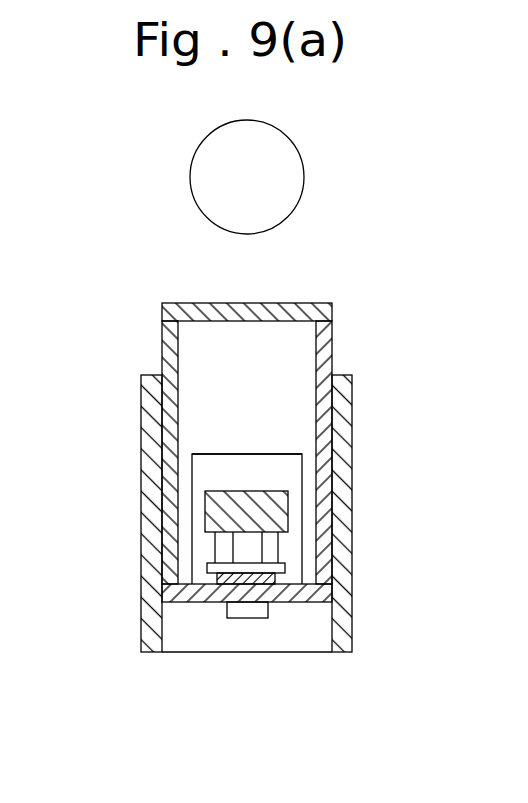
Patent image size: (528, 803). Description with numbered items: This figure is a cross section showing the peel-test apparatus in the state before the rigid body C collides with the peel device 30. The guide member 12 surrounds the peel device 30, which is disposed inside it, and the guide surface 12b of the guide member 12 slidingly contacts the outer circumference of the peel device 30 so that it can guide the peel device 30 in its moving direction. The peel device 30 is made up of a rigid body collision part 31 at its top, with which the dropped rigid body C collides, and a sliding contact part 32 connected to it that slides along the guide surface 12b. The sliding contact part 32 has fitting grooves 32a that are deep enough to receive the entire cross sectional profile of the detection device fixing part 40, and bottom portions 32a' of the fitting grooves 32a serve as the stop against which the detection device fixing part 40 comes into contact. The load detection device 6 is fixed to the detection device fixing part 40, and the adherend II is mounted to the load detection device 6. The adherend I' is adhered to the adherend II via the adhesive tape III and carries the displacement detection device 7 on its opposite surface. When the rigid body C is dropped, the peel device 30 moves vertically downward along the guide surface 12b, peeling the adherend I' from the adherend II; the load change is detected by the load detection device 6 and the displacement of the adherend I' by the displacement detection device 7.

The guide member 12 is at (153, 375).
The guide surface 12b is at (165, 408).
The peel device 30 is at (251, 416).
The rigid body collision part 31 is at (268, 303).
The sliding contact part 32 is at (232, 449).
The fitting groove 32a is at (323, 519).
The bottom portion of fitting groove 32a' is at (311, 423).
The detection device fixing part 40 is at (220, 515).
The load detection device 6 is at (273, 551).
The displacement detection device 7 is at (268, 607).
The rigid body C is at (213, 175).
The adherend II is at (207, 568).
The adhesive tape III is at (213, 573).
The adherend I' is at (345, 692).